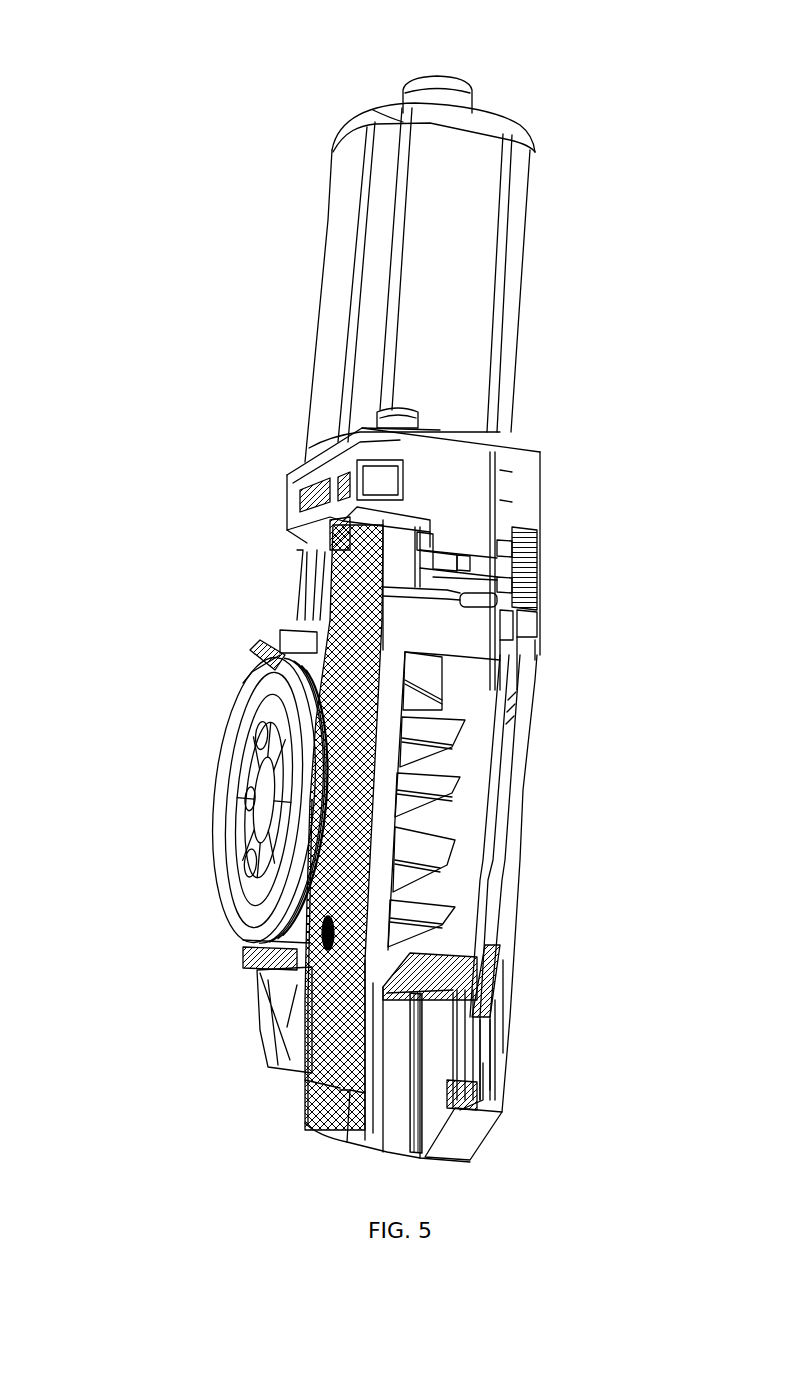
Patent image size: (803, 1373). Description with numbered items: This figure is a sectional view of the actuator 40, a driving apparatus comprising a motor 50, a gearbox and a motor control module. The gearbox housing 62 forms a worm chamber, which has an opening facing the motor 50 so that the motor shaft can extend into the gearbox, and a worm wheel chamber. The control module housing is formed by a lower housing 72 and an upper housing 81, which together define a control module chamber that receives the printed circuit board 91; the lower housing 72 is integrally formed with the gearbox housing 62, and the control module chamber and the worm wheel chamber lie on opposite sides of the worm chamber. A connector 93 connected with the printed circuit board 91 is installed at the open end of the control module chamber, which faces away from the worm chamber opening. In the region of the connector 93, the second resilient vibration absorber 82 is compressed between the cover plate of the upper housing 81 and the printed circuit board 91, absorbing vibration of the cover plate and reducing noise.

The actuator 40 is at (448, 43).
The motor 50 is at (327, 200).
The gearbox housing 62 is at (245, 835).
The lower housing 72 is at (313, 1002).
The upper housing 81 is at (523, 790).
The printed circuit board 91 is at (493, 887).
The second resilient vibration absorber 82 is at (483, 1063).
The connector 93 is at (395, 1130).